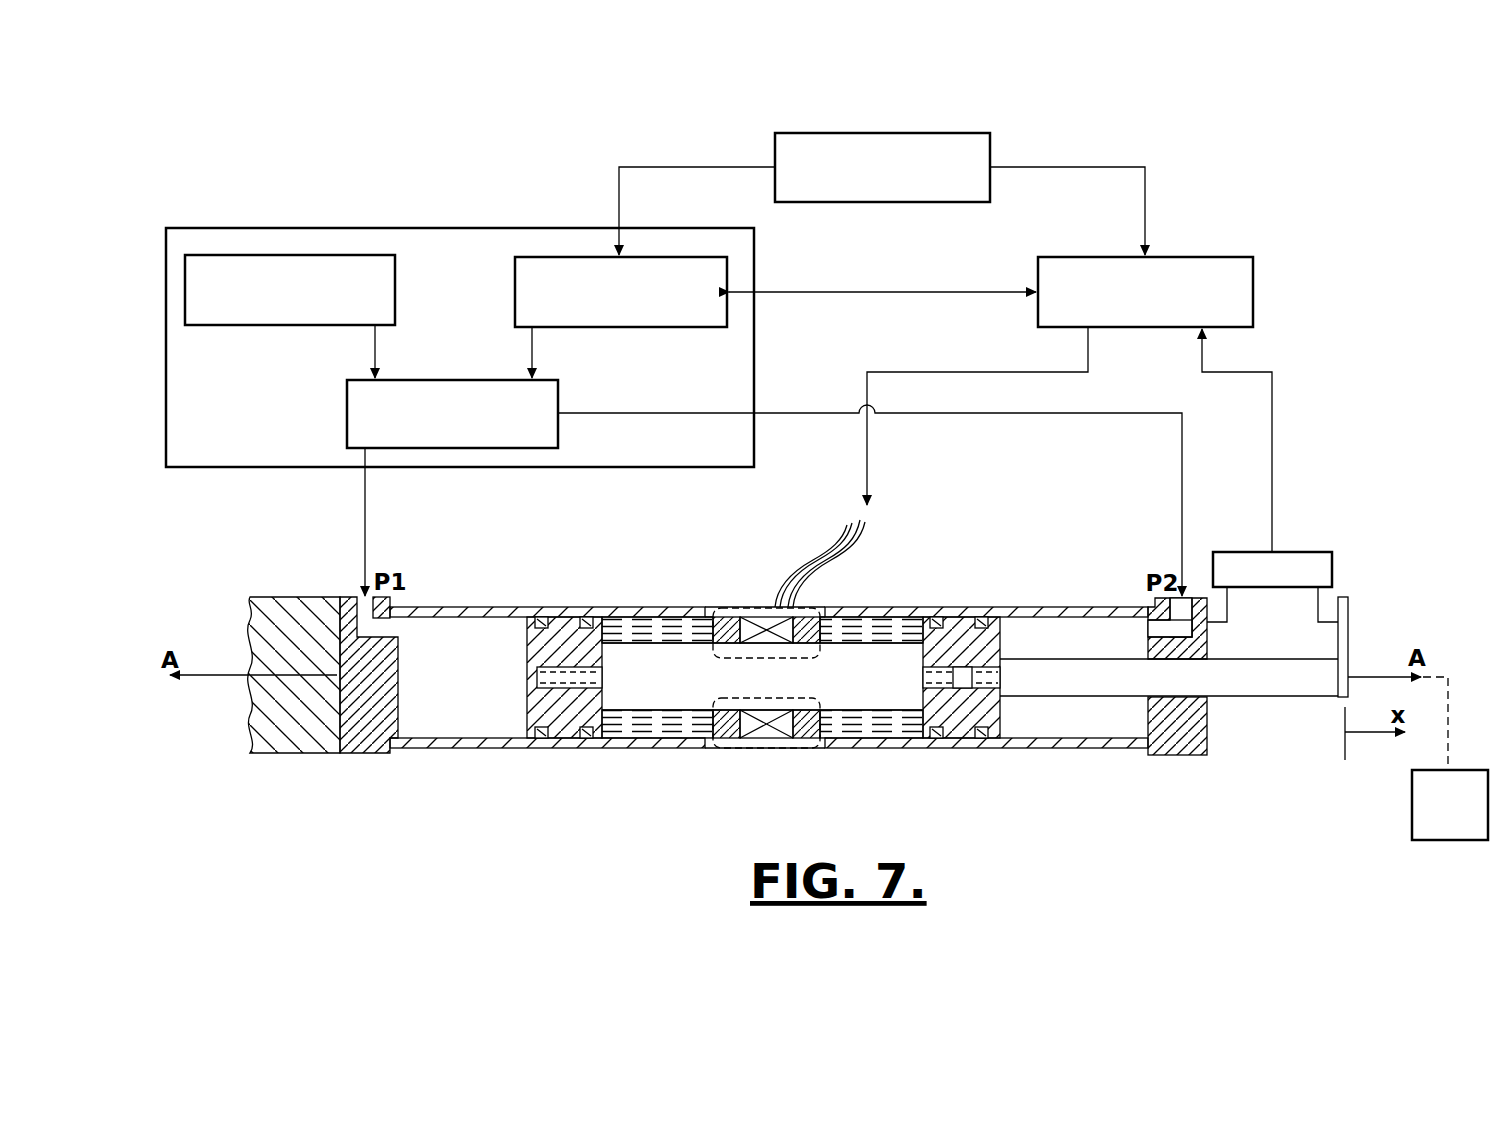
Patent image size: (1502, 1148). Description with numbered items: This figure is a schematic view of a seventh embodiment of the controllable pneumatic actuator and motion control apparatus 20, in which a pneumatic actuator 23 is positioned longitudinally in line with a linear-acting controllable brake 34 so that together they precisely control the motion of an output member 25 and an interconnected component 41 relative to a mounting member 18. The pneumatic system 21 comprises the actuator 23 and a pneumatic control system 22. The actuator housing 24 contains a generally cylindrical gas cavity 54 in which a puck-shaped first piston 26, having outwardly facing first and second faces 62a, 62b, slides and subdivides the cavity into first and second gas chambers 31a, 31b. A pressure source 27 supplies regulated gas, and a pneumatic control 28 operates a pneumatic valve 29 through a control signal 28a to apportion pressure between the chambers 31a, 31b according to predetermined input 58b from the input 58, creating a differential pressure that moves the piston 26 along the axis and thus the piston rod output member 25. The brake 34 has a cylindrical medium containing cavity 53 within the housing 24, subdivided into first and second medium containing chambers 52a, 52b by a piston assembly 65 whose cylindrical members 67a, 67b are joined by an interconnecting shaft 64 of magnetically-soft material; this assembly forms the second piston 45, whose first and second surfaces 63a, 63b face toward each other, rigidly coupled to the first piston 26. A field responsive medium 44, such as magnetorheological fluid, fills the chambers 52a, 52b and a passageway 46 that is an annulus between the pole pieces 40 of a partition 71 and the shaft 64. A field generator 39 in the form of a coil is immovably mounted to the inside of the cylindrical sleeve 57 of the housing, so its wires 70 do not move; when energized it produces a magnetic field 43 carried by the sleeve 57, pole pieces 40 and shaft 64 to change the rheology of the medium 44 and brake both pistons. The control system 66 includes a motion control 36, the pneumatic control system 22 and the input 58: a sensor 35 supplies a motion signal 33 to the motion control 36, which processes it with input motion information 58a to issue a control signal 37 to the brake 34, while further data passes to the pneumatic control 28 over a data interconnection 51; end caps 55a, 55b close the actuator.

The mounting member 18 is at (288, 745).
The controllable pneumatic actuator and motion control apparatus 20 is at (600, 843).
The pneumatic system 21 is at (548, 548).
The pneumatic control system 22 is at (754, 252).
The pneumatic actuator 23 is at (452, 750).
The housing 24 is at (955, 757).
The output member 25 is at (1280, 683).
The first piston 26 is at (518, 733).
The pressure source 27 is at (268, 328).
The pneumatic control 28 is at (630, 328).
The control signal 28a is at (532, 338).
The pneumatic valve 29 is at (347, 410).
The first gas chamber 31a is at (452, 672).
The second gas chamber 31b is at (1077, 635).
The motion signal 33 is at (1272, 517).
The linear-acting controllable brake 34 is at (827, 760).
The sensor 35 is at (1290, 552).
The motion control 36 is at (1125, 328).
The control signal 37 is at (960, 372).
The field generator 39 is at (765, 738).
The pole pieces 40 is at (720, 735).
The interconnected component 41 is at (1412, 795).
The magnetic field 43 is at (755, 605).
The field responsive medium 44 is at (643, 730).
The second piston 45 is at (607, 623).
The passageway 46 is at (810, 700).
The data interconnection 51 is at (805, 293).
The first medium containing chamber 52a is at (683, 622).
The second medium containing chamber 52b is at (870, 620).
The medium containing cavity 53 is at (845, 607).
The gas cavity 54 is at (1047, 625).
The first end cap 55a is at (367, 753).
The second end cap 55b is at (1185, 758).
The cylindrical sleeve 57 is at (1065, 748).
The input 58 is at (885, 203).
The input motion information 58a is at (1145, 203).
The predetermined input 58b is at (619, 200).
The first face 62a is at (525, 643).
The second face 62b is at (1010, 613).
The first surface 63a is at (608, 742).
The second surface 63b is at (932, 740).
The interconnecting shaft 64 is at (762, 676).
The piston assembly 65 is at (643, 635).
The control system 66 is at (1222, 220).
The cylindrical member 67a is at (562, 737).
The cylindrical member 67b is at (975, 745).
The wires 70 is at (840, 530).
The partition 71 is at (733, 600).